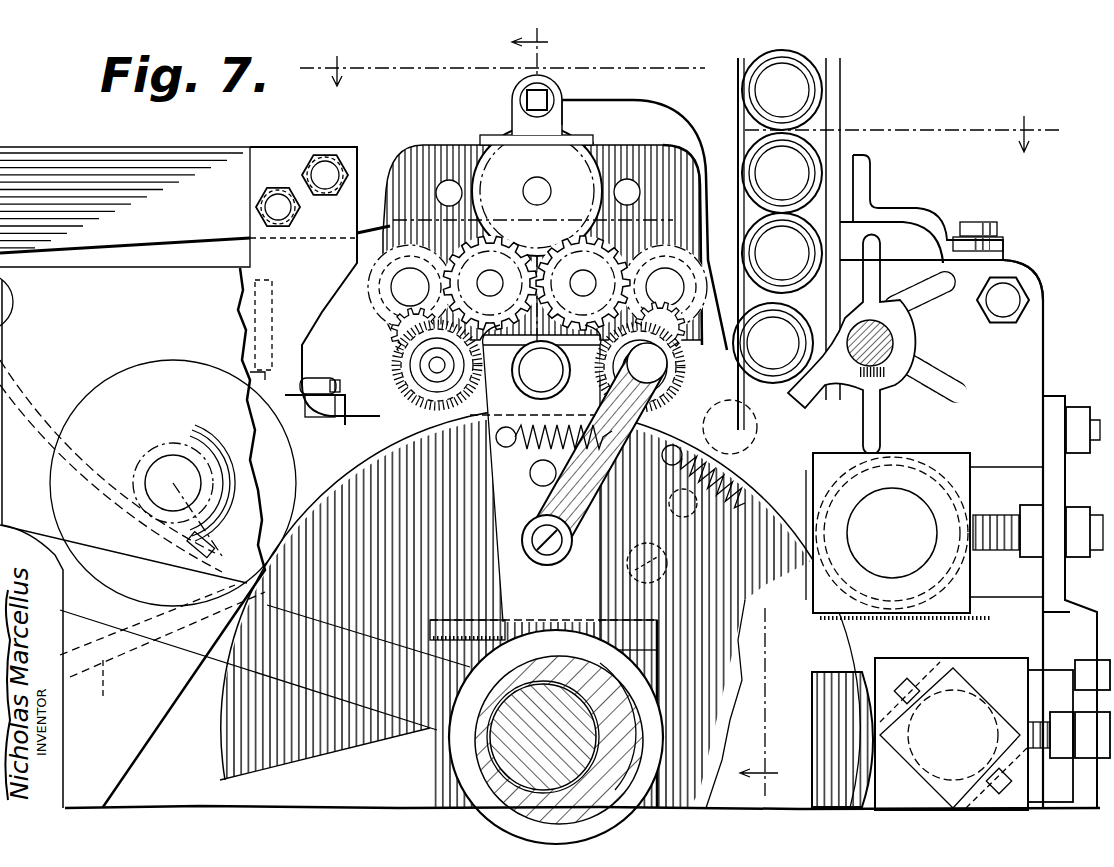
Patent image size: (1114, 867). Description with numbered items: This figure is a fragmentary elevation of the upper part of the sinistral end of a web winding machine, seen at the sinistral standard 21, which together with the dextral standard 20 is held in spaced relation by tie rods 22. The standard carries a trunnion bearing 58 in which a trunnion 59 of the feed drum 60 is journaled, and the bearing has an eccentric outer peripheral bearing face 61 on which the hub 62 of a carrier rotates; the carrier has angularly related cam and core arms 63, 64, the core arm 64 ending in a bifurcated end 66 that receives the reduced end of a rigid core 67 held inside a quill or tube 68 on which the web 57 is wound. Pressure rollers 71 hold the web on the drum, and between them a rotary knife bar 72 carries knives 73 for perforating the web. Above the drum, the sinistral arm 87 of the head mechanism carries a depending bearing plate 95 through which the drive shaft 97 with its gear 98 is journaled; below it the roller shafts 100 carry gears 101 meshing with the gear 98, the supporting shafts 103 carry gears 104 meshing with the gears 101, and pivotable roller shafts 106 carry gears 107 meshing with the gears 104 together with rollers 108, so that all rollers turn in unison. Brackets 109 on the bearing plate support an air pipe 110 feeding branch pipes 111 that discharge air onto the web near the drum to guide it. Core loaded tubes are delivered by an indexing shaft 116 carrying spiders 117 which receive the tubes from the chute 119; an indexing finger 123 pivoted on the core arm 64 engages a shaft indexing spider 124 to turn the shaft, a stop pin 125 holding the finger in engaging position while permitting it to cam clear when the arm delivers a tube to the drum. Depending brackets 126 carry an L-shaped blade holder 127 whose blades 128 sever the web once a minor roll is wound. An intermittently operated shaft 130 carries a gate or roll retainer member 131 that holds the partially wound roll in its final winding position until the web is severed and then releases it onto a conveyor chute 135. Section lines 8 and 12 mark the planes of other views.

The section line 8- 8 is at (654, 412).
The section line 12- 12 is at (681, 91).
The dextral end standard 20 is at (887, 267).
The sinistral end standard 21 is at (1028, 275).
The tie rods 22 is at (1010, 300).
The web 57 is at (868, 747).
The trunnion bearings 58 is at (618, 700).
The trunnions 59 is at (572, 740).
The feed drum 60 is at (905, 672).
The eccentric outer peripheral bearing faces 61 is at (656, 754).
The hub 62 is at (615, 663).
The cam arm 63 is at (200, 790).
The core arm 64 is at (546, 605).
The bifurcated end 66 is at (810, 430).
The cylindrical rigid core 67 is at (556, 381).
The quill or tube 68 is at (168, 455).
The pressure rollers 71 is at (900, 455).
The rotary knife bar 72 is at (980, 690).
The knives 73 is at (953, 735).
The sinistral arm 87 is at (236, 160).
The bearing plates 95 is at (637, 157).
The drive shaft 97 is at (537, 191).
The gear 98 is at (572, 157).
The roller shafts 100 is at (583, 283).
The gears 101 is at (572, 253).
The supporting shafts 103 is at (666, 288).
The gears 104 is at (674, 262).
The roller shafts 106 is at (400, 350).
The gears 107 is at (420, 370).
The rollers 108 is at (680, 330).
The brackets 109 is at (515, 90).
The pipe 110 is at (520, 102).
The branch pipes 111 is at (633, 95).
The indexing shaft 116 is at (880, 343).
The spiders 117 is at (900, 385).
The chute 119 is at (840, 173).
The indexing finger 123 is at (730, 426).
The shaft indexing spider 124 is at (893, 303).
The stop pin 125 is at (690, 505).
The depending brackets 126 is at (370, 185).
The blade holder 127 is at (300, 408).
The blades 128 is at (300, 388).
The intermittently operated shaft 130 is at (18, 305).
The gate or roll retainer member 131 is at (27, 407).
The conveyor chute 135 is at (108, 691).